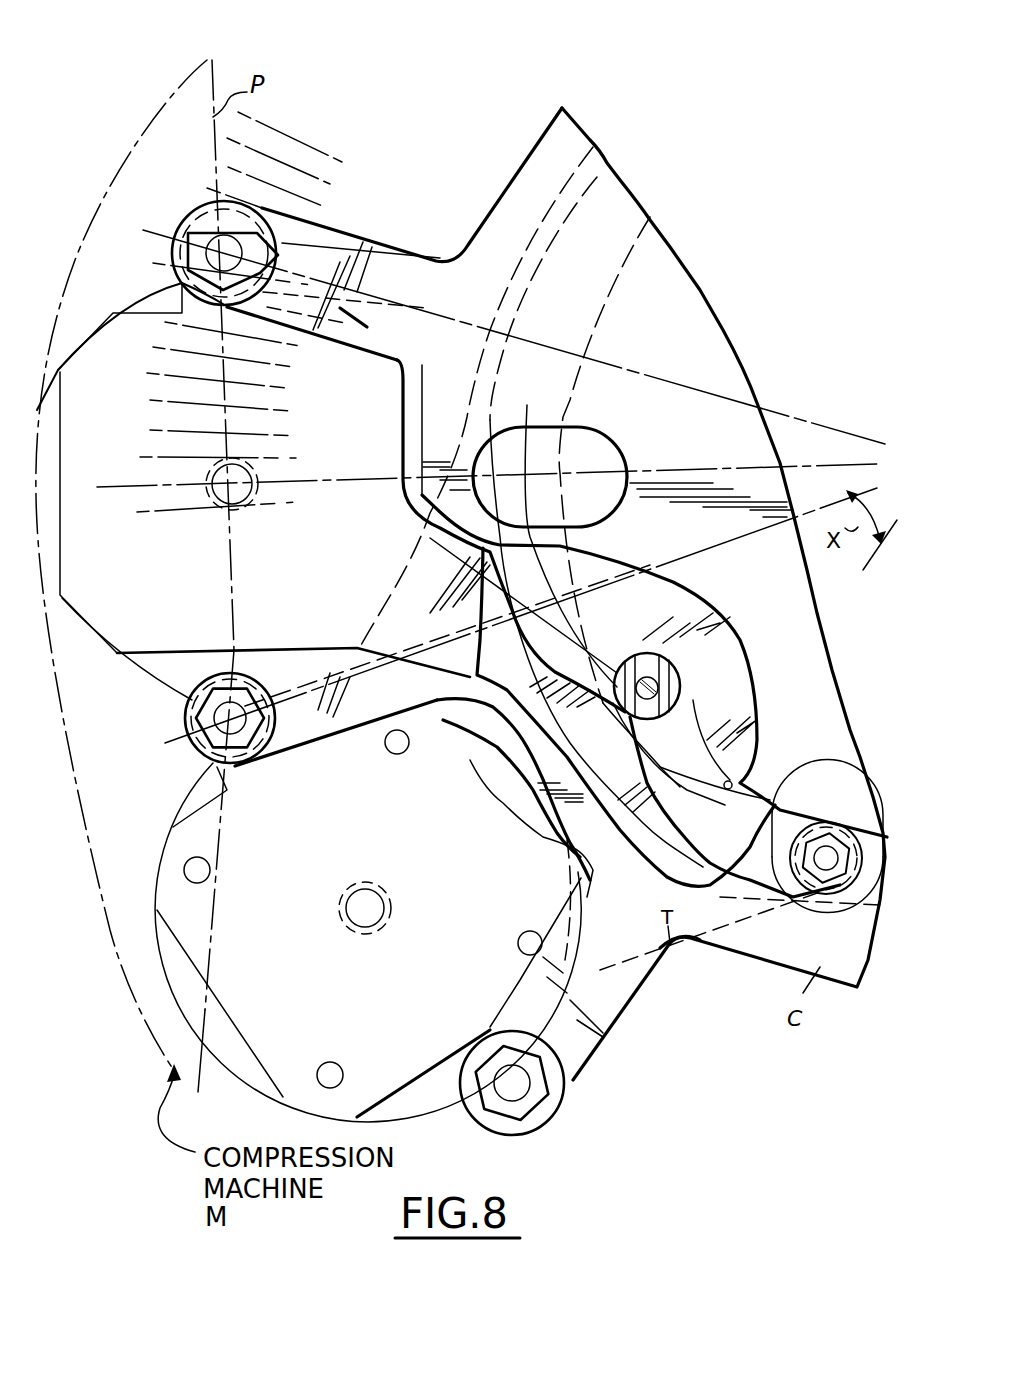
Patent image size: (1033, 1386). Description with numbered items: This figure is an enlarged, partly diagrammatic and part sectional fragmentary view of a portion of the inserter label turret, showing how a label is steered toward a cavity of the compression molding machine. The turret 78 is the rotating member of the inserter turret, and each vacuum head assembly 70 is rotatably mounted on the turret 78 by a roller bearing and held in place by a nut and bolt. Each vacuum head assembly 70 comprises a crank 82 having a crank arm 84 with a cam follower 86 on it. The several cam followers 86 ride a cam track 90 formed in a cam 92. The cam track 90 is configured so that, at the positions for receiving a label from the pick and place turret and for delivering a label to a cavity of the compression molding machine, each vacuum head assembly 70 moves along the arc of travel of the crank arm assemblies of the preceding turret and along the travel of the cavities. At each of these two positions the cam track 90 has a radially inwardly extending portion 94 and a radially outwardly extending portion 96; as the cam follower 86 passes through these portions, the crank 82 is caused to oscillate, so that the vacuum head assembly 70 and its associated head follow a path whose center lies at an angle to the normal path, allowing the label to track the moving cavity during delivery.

The vacuum head assembly 70 is at (422, 1100).
The turret 78 is at (670, 945).
The crank 82 is at (172, 605).
The crank arm 84 is at (463, 650).
The cam follower 86 is at (712, 655).
The cam track 90 is at (732, 781).
The cam 92 is at (740, 695).
The radially inwardly extending portion 94 is at (740, 665).
The radially outwardly extending portion 96 is at (604, 628).